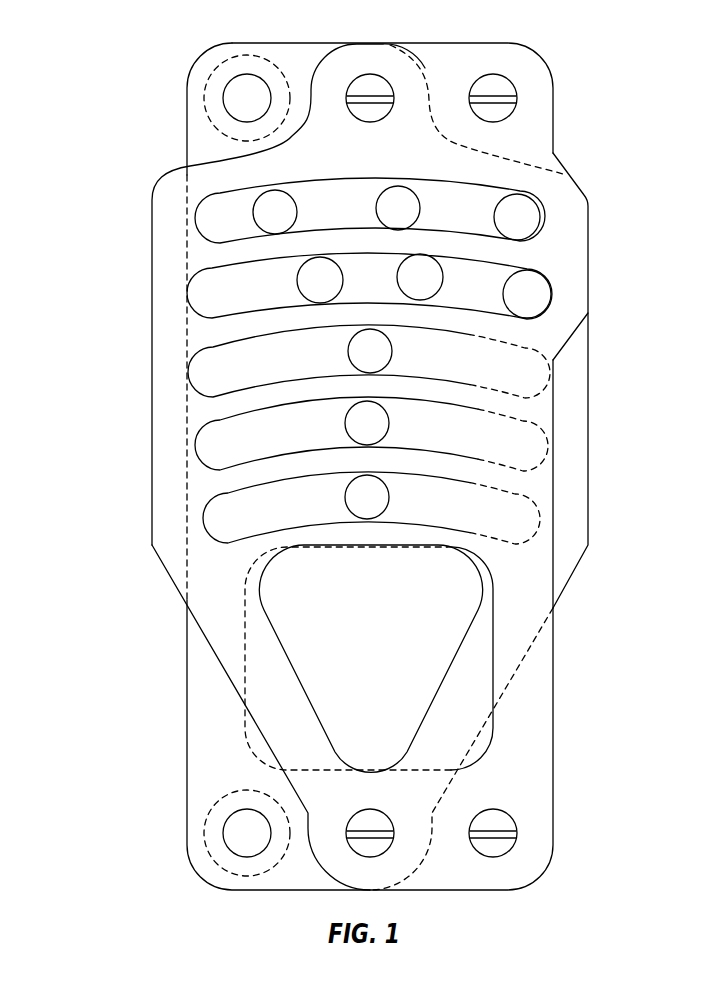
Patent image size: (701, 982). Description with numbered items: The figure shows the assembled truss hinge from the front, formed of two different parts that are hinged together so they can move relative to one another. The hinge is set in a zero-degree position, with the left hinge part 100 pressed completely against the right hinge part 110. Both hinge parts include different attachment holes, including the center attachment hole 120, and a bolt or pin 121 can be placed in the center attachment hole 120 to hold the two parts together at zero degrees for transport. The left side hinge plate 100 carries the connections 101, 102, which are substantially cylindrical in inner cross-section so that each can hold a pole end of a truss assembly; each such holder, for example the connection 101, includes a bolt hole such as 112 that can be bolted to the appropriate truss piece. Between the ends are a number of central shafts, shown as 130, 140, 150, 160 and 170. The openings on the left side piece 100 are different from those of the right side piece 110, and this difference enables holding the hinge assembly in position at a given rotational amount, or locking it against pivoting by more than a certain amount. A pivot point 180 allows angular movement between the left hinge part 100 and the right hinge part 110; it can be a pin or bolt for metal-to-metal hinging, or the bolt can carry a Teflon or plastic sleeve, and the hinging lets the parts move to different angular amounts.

The left hinge part 100 is at (167, 252).
The connection 101 is at (139, 106).
The connection 102 is at (139, 842).
The right hinge part 110 is at (545, 125).
The bolt hole 112 is at (126, 40).
The center attachment hole 120 is at (347, 88).
The bolt or pin 121 is at (390, 87).
The central shaft 130 is at (196, 218).
The central shaft 140 is at (187, 295).
The central shaft 150 is at (188, 372).
The central shaft 160 is at (195, 446).
The central shaft 170 is at (203, 519).
The pivot point 180 is at (377, 845).